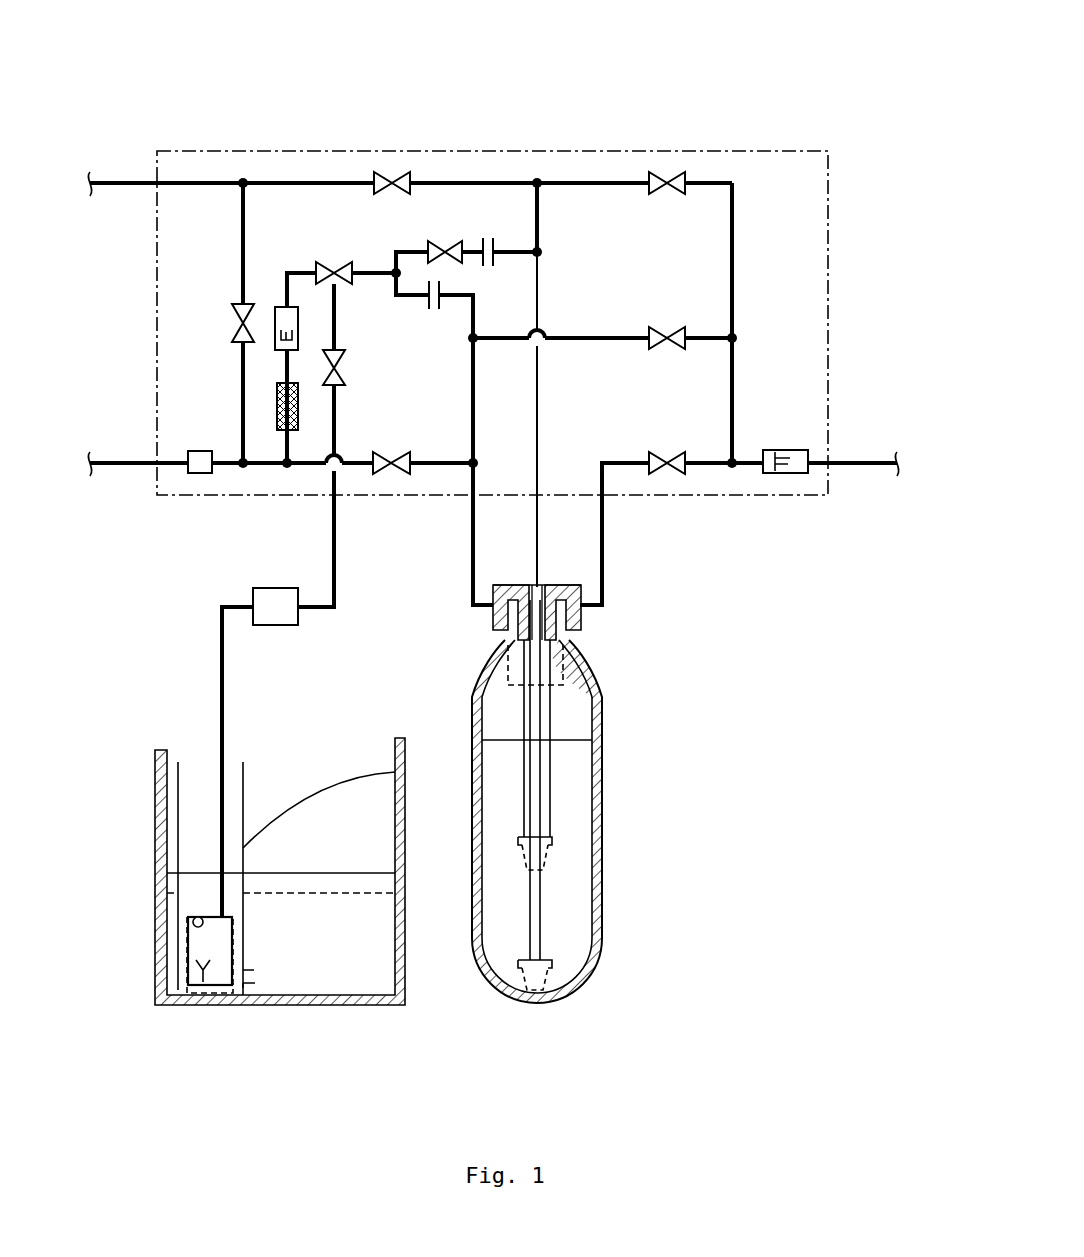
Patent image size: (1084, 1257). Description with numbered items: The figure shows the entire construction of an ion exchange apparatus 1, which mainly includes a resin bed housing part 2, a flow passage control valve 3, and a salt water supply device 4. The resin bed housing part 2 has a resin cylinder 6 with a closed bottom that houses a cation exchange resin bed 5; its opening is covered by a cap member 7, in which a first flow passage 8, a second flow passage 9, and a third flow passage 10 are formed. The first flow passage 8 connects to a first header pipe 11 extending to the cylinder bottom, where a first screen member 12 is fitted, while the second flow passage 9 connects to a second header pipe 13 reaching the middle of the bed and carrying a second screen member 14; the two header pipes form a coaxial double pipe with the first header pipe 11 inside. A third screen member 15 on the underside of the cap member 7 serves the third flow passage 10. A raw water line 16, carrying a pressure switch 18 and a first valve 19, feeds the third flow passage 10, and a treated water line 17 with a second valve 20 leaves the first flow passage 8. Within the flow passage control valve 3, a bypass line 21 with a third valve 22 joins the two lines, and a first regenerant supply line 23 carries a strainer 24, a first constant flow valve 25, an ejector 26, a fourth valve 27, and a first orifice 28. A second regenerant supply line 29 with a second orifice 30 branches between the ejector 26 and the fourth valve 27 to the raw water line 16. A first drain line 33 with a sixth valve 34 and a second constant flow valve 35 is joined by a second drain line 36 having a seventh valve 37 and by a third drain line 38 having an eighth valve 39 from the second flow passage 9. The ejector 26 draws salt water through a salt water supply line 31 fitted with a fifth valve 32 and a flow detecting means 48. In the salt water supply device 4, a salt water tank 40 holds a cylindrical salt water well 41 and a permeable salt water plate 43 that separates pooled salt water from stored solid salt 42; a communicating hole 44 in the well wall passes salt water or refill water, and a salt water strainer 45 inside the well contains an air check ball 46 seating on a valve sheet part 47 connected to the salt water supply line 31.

The ion exchange apparatus 1 is at (473, 70).
The resin bed housing part 2 is at (622, 795).
The flow passage control valve 3 is at (754, 150).
The salt water supply device 4 is at (305, 1020).
The cation exchange resin bed 5 is at (570, 773).
The resin cylinder 6 is at (604, 935).
The cap member 7 is at (512, 582).
The first flow passage 8 is at (545, 585).
The second flow passage 9 is at (582, 610).
The third flow passage 10 is at (490, 610).
The first header pipe 11 is at (542, 905).
The first screen member 12 is at (552, 978).
The second header pipe 13 is at (552, 722).
The second screen member 14 is at (552, 853).
The third screen member 15 is at (565, 682).
The raw water line 16 is at (120, 466).
The treated water line 17 is at (300, 175).
The pressure switch 18 is at (200, 474).
The first valve 19 is at (393, 476).
The second valve 20 is at (392, 170).
The bypass line 21 is at (241, 254).
The third valve 22 is at (233, 322).
The first regenerant supply line 23 is at (298, 272).
The strainer 24 is at (276, 410).
The first constant flow valve 25 is at (298, 332).
The ejector 26 is at (352, 262).
The fourth valve 27 is at (445, 240).
The first orifice 28 is at (488, 236).
The second regenerant supply line 29 is at (475, 417).
The second orifice 30 is at (433, 312).
The salt water supply line 31 is at (337, 416).
The fifth valve 32 is at (340, 372).
The first drain line 33 is at (594, 178).
The sixth valve 34 is at (667, 170).
The second constant flow valve 35 is at (785, 474).
The second drain line 36 is at (598, 336).
The seventh valve 37 is at (667, 328).
The third drain line 38 is at (702, 460).
The eighth valve 39 is at (668, 476).
The salt water tank 40 is at (338, 1007).
The salt water well 41 is at (246, 780).
The solid salt 42 is at (364, 771).
The salt water plate 43 is at (362, 896).
The communicating hole 44 is at (256, 993).
The salt water strainer 45 is at (186, 982).
The air check ball 46 is at (196, 915).
The valve sheet part 47 is at (196, 960).
The flow detecting means 48 is at (278, 587).